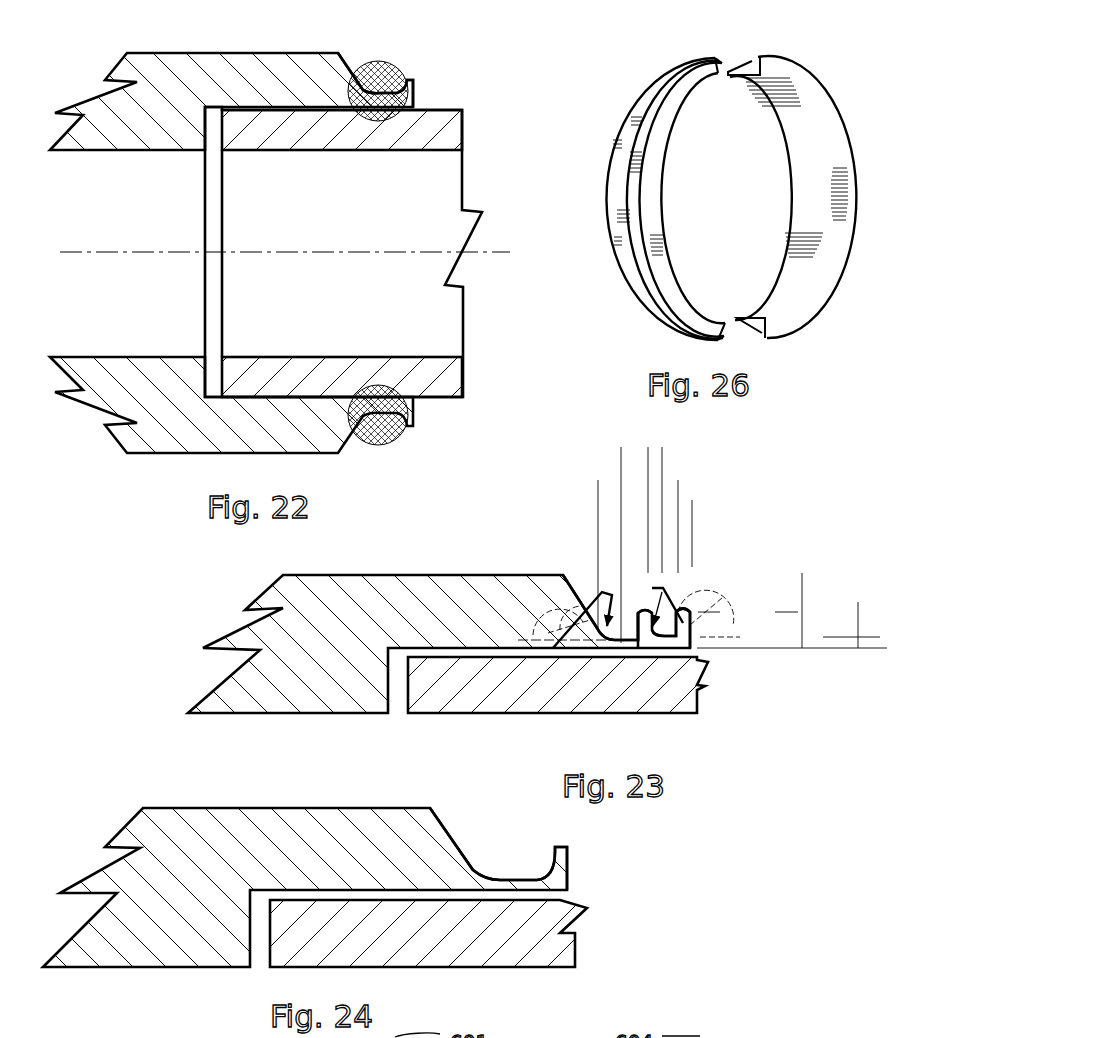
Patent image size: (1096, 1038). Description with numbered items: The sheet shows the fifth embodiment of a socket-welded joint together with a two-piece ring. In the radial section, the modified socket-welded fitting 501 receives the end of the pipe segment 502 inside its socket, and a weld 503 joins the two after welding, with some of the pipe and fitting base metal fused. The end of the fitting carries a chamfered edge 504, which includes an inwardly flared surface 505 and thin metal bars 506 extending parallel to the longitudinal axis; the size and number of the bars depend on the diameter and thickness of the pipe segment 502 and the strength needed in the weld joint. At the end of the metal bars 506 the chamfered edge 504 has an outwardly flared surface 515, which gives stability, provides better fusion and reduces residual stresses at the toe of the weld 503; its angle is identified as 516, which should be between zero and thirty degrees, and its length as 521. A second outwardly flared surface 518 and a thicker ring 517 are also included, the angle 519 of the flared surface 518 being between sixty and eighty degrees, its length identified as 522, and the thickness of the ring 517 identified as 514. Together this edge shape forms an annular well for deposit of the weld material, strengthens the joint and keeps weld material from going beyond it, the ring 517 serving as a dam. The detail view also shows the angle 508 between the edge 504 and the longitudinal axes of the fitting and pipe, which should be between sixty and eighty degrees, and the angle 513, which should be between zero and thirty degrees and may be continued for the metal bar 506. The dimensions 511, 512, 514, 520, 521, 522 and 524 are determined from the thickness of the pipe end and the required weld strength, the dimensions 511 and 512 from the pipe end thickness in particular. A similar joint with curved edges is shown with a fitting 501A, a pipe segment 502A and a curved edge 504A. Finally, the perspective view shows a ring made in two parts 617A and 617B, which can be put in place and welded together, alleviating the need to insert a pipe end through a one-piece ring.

In FIG. 22, the modified socket-welded fitting 501 is at (173, 67).
In FIG. 23, the modified socket-welded fitting 501 is at (315, 585).
In FIG. 22, the pipe segment 502 is at (450, 127).
In FIG. 23, the pipe segment 502 is at (428, 703).
In FIG. 22, the weld 503 is at (380, 63).
In FIG. 22, the chamfered edge 504 is at (342, 52).
In FIG. 23, the chamfered edge 504 is at (583, 597).
In FIG. 23, the inwardly flared surface 505 is at (602, 592).
In FIG. 23, the thin metal bars 506 is at (628, 643).
In FIG. 23, the angle 508 is at (555, 606).
In FIG. 23, the dimension 511 is at (621, 500).
In FIG. 23, the dimension 512 is at (858, 636).
In FIG. 23, the angle 513 is at (525, 630).
In FIG. 23, the thickness of the ring 514 is at (802, 611).
In FIG. 23, the outwardly flared surface 515 is at (638, 613).
In FIG. 23, the angle of the flared surface 516 is at (722, 622).
In FIG. 23, the thicker ring 517 is at (698, 633).
In FIG. 23, the outwardly flared surface 518 is at (652, 588).
In FIG. 23, the angle 519 is at (707, 589).
In FIG. 23, the dimension 520 is at (648, 452).
In FIG. 23, the length of flared surface 521 is at (662, 462).
In FIG. 23, the length of flared surface 522 is at (678, 483).
In FIG. 23, the dimension 524 is at (692, 510).
In FIG. 24, the socket-welded fitting 501A is at (160, 820).
In FIG. 24, the pipe segment 502A is at (560, 906).
In FIG. 24, the chamfered edge 504A is at (462, 841).
In FIG. 26, the ring part 617A is at (787, 127).
In FIG. 26, the ring part 617B is at (672, 288).